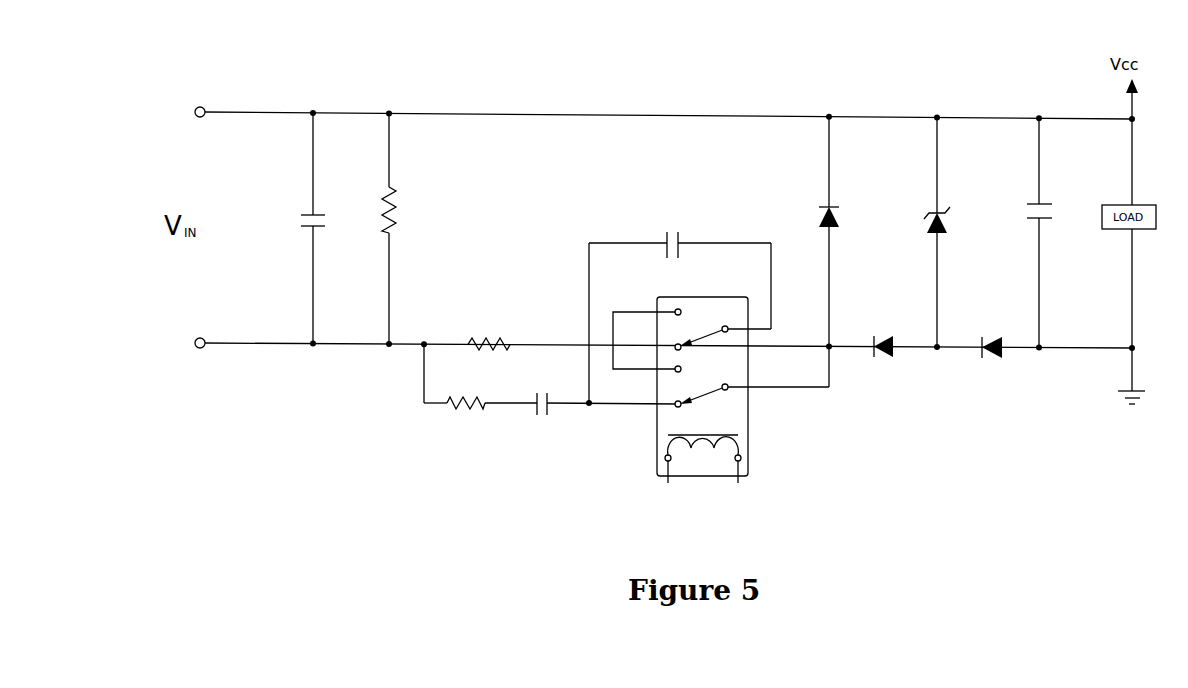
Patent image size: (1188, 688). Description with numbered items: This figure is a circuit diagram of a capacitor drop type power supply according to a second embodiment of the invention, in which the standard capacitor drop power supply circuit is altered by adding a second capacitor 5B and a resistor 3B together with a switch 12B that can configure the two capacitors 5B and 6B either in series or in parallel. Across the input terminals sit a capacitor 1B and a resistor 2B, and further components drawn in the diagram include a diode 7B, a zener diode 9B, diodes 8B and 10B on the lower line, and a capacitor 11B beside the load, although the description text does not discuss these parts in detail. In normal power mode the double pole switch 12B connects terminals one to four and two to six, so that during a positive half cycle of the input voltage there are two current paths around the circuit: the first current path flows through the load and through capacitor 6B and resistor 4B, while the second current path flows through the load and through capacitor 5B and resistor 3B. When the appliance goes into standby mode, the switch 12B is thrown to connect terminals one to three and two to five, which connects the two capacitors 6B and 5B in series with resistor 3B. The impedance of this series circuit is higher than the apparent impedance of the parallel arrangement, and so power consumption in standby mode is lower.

The input capacitor 1B is at (293, 228).
The input resistor 2B is at (371, 229).
The resistor 3B is at (466, 389).
The resistor 4B is at (489, 330).
The second capacitor 5B is at (539, 392).
The capacitor 6B is at (680, 306).
The diode 7B is at (808, 232).
The diode 8B is at (879, 337).
The zener diode 9B is at (921, 233).
The diode 10B is at (986, 338).
The output capacitor 11B is at (1020, 232).
The switch 12B is at (721, 388).